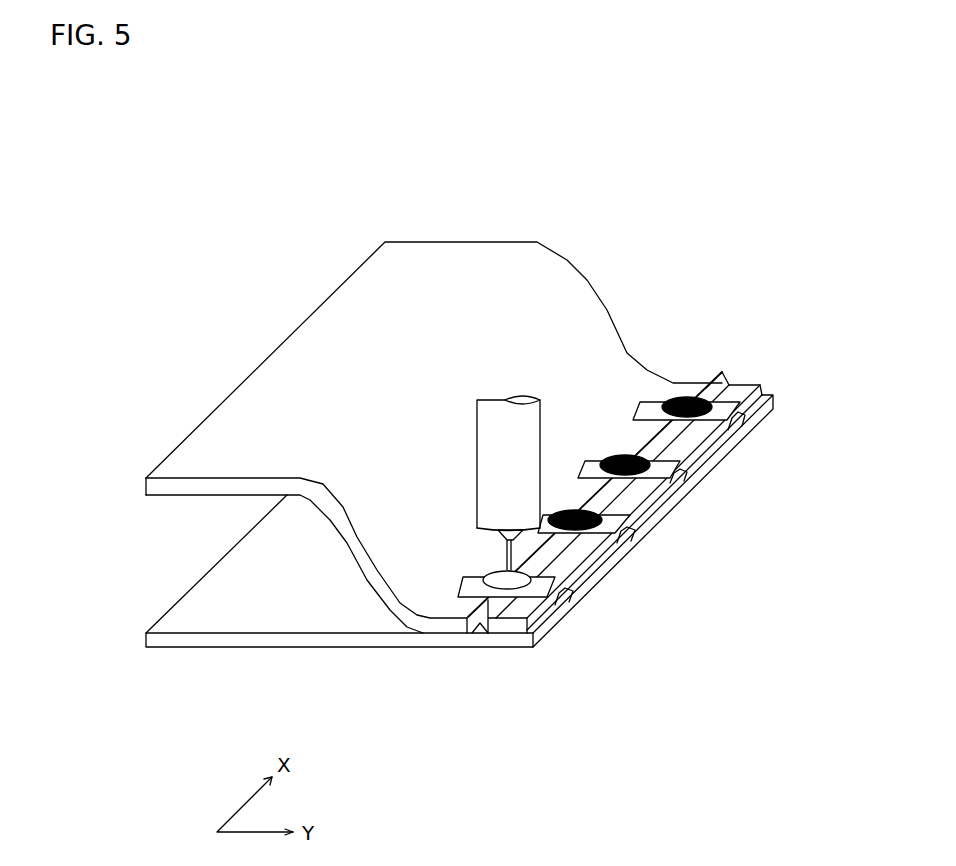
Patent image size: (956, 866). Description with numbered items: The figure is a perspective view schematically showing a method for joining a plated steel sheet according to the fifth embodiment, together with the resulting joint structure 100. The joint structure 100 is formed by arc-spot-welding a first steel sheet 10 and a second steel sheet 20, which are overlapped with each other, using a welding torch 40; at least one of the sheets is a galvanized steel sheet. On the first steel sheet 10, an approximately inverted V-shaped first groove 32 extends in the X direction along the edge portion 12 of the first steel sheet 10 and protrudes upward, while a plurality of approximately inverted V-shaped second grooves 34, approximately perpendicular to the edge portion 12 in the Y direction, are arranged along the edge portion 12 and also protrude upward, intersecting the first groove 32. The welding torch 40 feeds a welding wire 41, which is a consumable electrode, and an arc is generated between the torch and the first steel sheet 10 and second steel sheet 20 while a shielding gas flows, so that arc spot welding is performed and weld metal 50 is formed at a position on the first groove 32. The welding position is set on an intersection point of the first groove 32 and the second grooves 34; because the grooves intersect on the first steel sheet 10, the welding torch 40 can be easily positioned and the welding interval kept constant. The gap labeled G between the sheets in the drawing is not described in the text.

The joint structure 100 is at (565, 178).
The first steel sheet 10 is at (235, 427).
The edge portion 12 is at (770, 396).
The second steel sheet 20 is at (203, 615).
The first groove 32 is at (478, 637).
The second grooves 34 is at (587, 602).
The welding torch 40 is at (517, 452).
The welding wire 41 is at (502, 553).
The weld metal 50 is at (507, 578).
The gap G is at (467, 637).